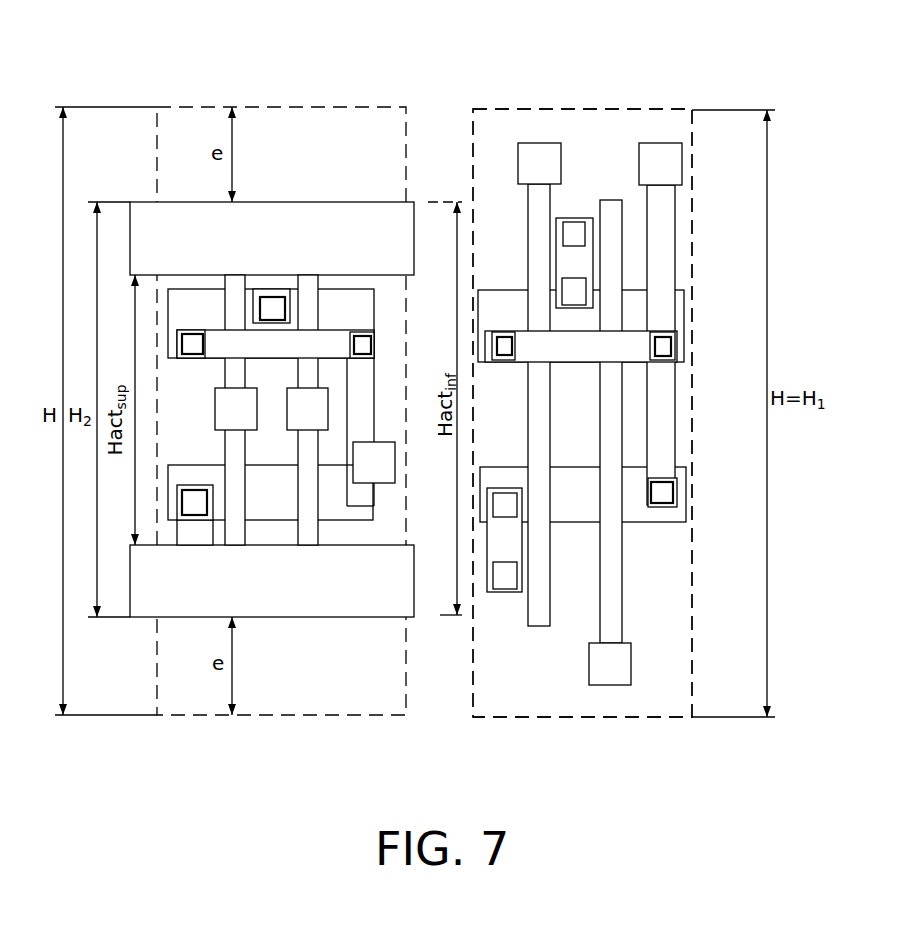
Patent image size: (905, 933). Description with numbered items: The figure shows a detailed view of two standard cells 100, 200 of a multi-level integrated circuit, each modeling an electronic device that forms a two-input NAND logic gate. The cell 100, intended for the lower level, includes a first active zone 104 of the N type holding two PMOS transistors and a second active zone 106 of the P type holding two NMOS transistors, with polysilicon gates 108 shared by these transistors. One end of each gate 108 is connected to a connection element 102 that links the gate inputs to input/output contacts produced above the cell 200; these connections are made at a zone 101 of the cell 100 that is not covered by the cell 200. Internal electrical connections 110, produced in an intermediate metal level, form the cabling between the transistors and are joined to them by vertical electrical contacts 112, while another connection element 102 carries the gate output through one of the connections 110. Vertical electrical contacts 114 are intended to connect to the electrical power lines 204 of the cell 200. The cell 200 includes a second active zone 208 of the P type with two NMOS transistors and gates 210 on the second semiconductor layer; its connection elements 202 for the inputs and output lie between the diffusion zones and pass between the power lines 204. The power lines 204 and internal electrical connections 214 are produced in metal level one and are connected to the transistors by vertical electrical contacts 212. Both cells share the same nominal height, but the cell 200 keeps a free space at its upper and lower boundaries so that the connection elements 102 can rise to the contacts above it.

The standard cell 100 is at (665, 100).
The zone of the cell not covered by the cell 200 101 is at (497, 130).
The connection elements 102 is at (537, 148).
The first active zone 104 is at (632, 512).
The second active zone 106 is at (502, 285).
The gates 108 is at (537, 533).
The internal electrical connections 110 is at (660, 230).
The vertical electrical contacts 112 is at (505, 350).
The vertical electrical contacts 114 is at (573, 230).
The standard cell 200 is at (198, 95).
The connection elements 202 is at (302, 413).
The electrical power lines 204 is at (347, 222).
The second active zone 208 is at (203, 310).
The gates 210 is at (302, 377).
The vertical electrical contacts 212 is at (270, 302).
The internal electrical connections 214 is at (337, 345).